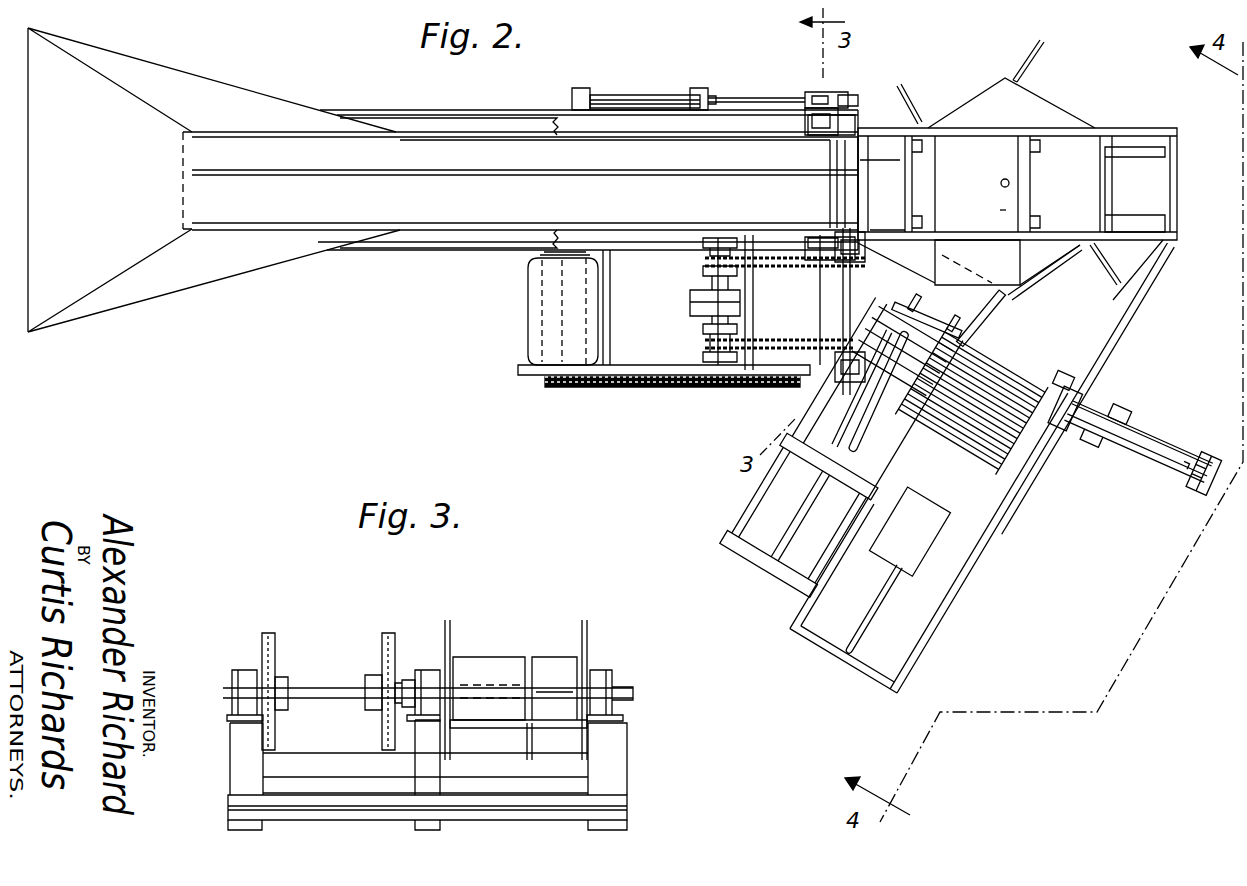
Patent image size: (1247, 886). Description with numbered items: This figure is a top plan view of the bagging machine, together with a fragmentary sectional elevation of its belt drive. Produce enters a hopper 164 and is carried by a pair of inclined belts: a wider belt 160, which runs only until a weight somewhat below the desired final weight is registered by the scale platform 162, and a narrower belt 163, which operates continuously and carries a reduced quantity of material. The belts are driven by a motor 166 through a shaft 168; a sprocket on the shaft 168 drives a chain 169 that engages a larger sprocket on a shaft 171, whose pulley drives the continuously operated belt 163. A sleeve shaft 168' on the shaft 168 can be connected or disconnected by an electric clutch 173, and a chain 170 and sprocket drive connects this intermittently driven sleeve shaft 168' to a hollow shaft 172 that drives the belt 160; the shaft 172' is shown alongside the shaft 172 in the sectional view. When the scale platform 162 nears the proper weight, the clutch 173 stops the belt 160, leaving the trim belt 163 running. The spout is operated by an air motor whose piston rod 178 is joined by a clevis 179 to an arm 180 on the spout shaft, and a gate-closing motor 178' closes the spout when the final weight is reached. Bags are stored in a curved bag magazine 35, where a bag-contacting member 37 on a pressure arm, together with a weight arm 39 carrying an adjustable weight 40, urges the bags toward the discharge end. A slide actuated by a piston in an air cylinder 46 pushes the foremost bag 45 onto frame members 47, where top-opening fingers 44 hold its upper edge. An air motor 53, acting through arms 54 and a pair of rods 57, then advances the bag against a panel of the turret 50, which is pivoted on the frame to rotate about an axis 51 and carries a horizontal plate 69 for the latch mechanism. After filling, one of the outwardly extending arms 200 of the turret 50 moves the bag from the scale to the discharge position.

In FIG. 2, the hopper 164 is at (142, 116).
In FIG. 2, the belt 160 is at (438, 226).
In FIG. 3, the belt 160 is at (478, 658).
In FIG. 2, the belt 163 is at (470, 138).
In FIG. 3, the belt 163 is at (554, 660).
In FIG. 2, the gate-closing motor 178' is at (640, 83).
In FIG. 2, the piston rod 178 is at (756, 80).
In FIG. 2, the clevis 179 is at (855, 80).
In FIG. 2, the arm 180 is at (856, 102).
In FIG. 2, the motor 166 is at (531, 317).
In FIG. 2, the electric clutch 173 is at (682, 300).
In FIG. 2, the sleeve shaft 168' is at (746, 270).
In FIG. 2, the shaft 168 is at (672, 407).
In FIG. 2, the chain 169 is at (788, 326).
In FIG. 3, the chain 169 is at (270, 632).
In FIG. 2, the chain 170 is at (775, 248).
In FIG. 3, the chain 170 is at (410, 610).
In FIG. 2, the shaft 171 is at (823, 268).
In FIG. 3, the shaft 171 is at (312, 686).
In FIG. 2, the hollow shaft 172 is at (815, 216).
In FIG. 3, the hollow shaft 172 is at (345, 660).
In FIG. 3, the shaft 172' is at (502, 637).
In FIG. 2, the turret 50 is at (1090, 110).
In FIG. 2, the scale platform 162 is at (883, 150).
In FIG. 2, the axis 51 is at (1010, 186).
In FIG. 2, the horizontal plate 69 is at (1004, 214).
In FIG. 2, the outwardly extending arms 200 is at (904, 90).
In FIG. 2, the bag magazine 35 is at (914, 664).
In FIG. 2, the bag-contacting member 37 is at (976, 525).
In FIG. 2, the weight arm 39 is at (1002, 487).
In FIG. 2, the weight 40 is at (931, 550).
In FIG. 2, the top-opening fingers 44 is at (899, 316).
In FIG. 2, the bag 45 is at (1024, 464).
In FIG. 2, the air cylinder 46 is at (1154, 470).
In FIG. 2, the frame members 47 is at (1160, 390).
In FIG. 2, the air motor 53 is at (797, 522).
In FIG. 2, the arms 54 is at (832, 402).
In FIG. 2, the rods 57 is at (862, 479).